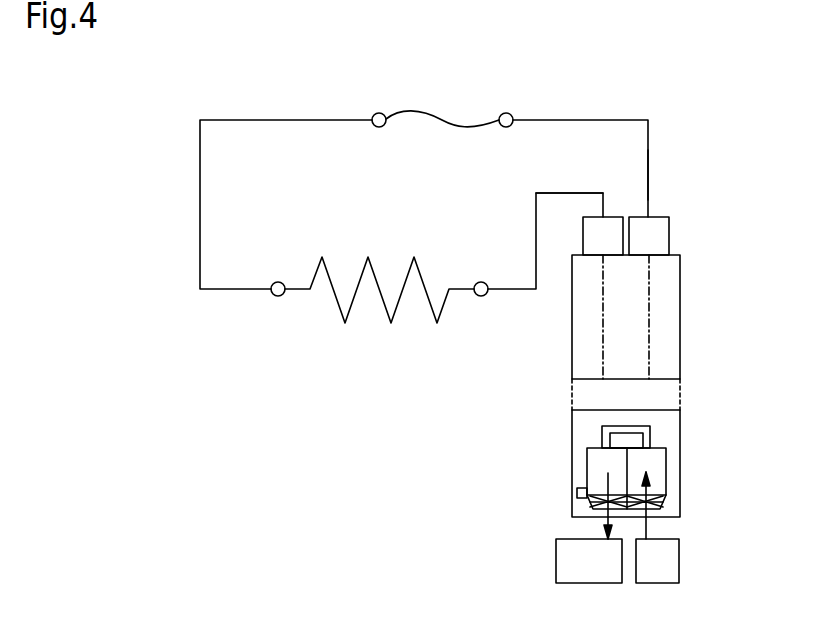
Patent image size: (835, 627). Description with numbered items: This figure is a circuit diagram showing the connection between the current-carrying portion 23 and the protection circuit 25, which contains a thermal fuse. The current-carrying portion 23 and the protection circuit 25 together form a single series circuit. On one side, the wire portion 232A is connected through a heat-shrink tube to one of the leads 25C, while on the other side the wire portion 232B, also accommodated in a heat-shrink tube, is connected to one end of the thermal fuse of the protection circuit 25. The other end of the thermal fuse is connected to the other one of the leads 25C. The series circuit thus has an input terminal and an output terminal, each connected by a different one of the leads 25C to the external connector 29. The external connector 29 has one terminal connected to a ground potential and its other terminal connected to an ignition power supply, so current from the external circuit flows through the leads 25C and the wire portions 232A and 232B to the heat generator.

The protection circuit 25 is at (441, 117).
The leads 25C is at (566, 191).
The current-carrying portion 23 is at (372, 266).
The wire portion 232A is at (276, 282).
The wire portion 232B is at (482, 282).
The external connector 29 is at (681, 462).